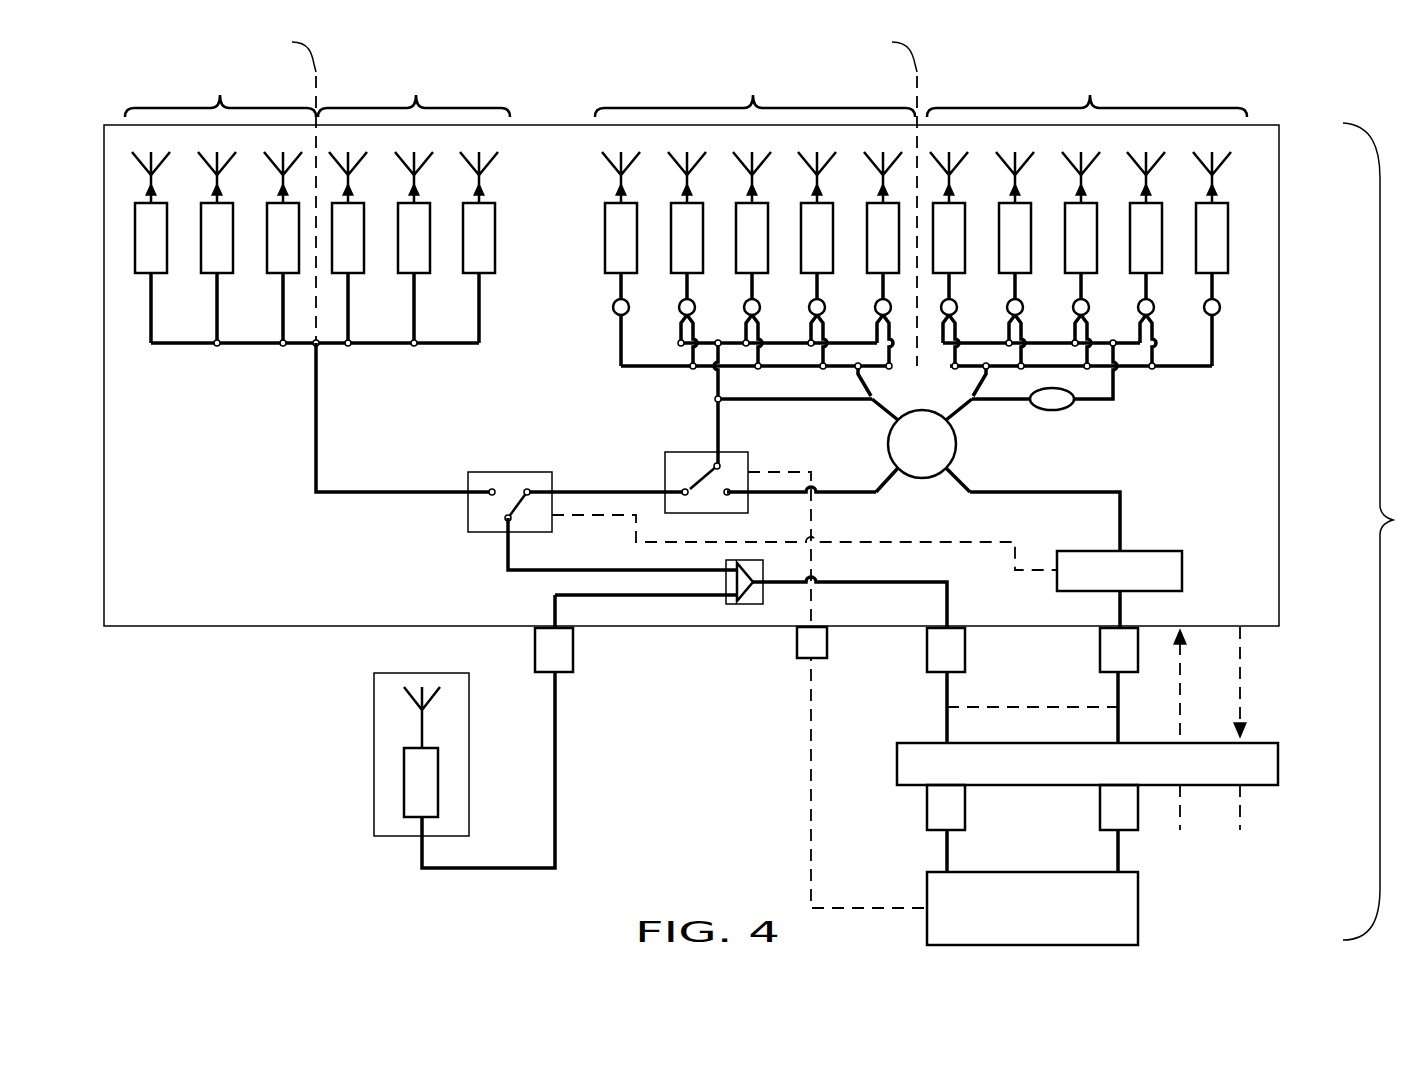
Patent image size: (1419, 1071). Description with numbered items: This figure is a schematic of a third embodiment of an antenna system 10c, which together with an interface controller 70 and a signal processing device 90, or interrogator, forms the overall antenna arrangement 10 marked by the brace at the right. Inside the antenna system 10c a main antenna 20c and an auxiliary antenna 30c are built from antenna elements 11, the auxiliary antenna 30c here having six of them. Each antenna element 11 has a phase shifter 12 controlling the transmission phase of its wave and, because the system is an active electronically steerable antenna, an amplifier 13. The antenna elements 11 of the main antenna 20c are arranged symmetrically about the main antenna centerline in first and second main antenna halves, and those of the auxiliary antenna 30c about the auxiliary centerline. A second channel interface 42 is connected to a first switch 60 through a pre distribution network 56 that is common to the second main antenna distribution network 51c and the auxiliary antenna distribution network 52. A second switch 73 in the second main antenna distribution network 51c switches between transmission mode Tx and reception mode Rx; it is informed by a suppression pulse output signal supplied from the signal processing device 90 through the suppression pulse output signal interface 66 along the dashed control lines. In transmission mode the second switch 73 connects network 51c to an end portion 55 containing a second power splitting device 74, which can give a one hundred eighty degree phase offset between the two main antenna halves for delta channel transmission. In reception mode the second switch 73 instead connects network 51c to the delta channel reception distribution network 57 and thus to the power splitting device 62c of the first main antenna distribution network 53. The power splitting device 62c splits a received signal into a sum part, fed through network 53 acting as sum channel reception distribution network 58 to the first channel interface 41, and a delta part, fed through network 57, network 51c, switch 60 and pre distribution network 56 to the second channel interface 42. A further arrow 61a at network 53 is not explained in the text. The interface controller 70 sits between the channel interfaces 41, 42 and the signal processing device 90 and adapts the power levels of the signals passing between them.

The antenna arrangement 10 is at (758, 489).
The antenna system 10c is at (1308, 110).
The antenna element 11 is at (594, 152).
The phase shifter 12 is at (605, 238).
The amplifier 13 is at (619, 188).
The main antenna 20c is at (1236, 326).
The auxiliary antenna 30c is at (258, 380).
The first channel interface 41 is at (1100, 656).
The second channel interface 42 is at (968, 636).
The second main antenna distribution network 51c is at (601, 492).
The auxiliary antenna distribution network 52 is at (389, 492).
The first main antenna distribution network 53 is at (1114, 560).
The sum channel reception distribution network 58 is at (1119, 571).
The end portion of the second main antenna distribution network 55 is at (811, 400).
The pre distribution network 56 is at (882, 585).
The delta channel reception distribution network 57 is at (792, 493).
The first switch 60 is at (506, 458).
The received signal 61a is at (1200, 578).
The power splitting device 62c is at (923, 445).
The suppression pulse output signal interface 66 is at (797, 640).
The interface controller 70 is at (1287, 795).
The second switch 73 is at (658, 453).
The second power splitting device 74 is at (1085, 414).
The signal processing device 90 is at (1155, 899).